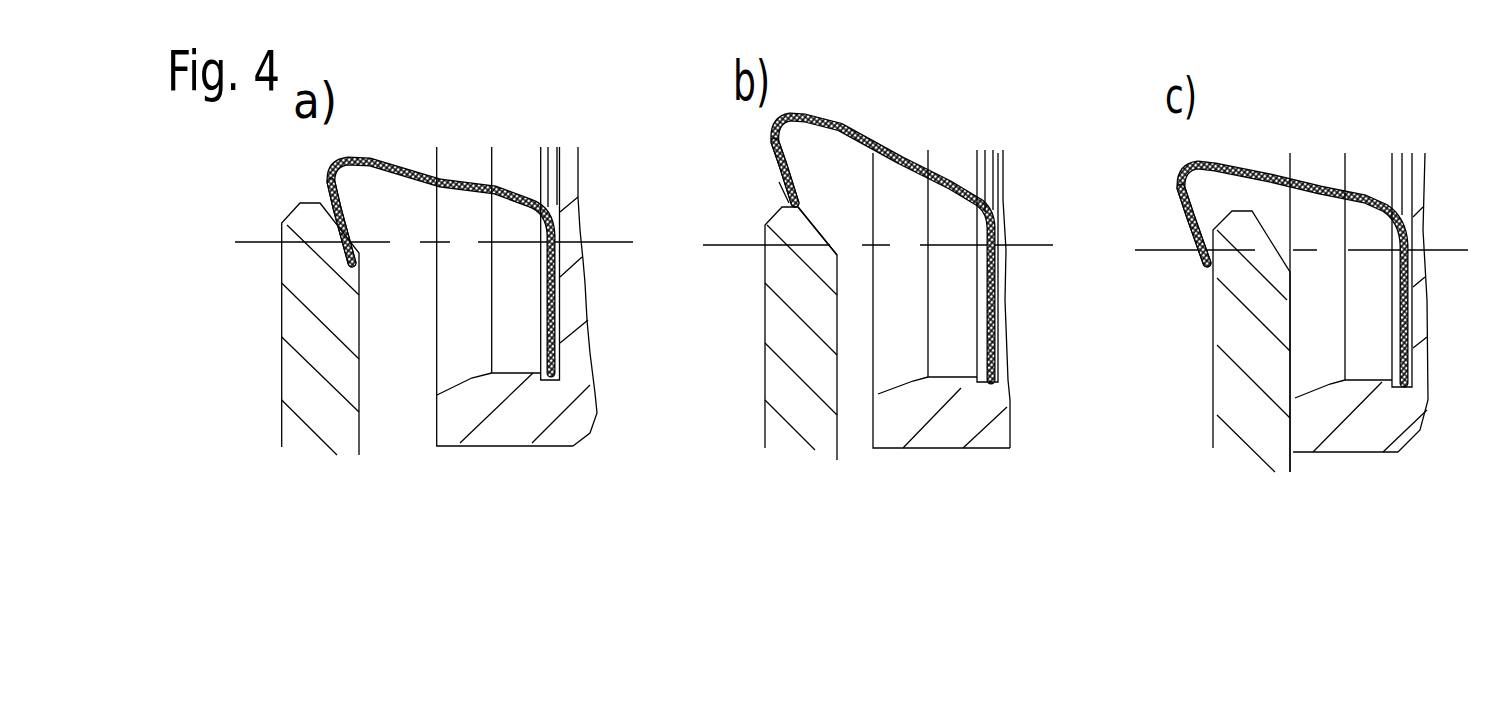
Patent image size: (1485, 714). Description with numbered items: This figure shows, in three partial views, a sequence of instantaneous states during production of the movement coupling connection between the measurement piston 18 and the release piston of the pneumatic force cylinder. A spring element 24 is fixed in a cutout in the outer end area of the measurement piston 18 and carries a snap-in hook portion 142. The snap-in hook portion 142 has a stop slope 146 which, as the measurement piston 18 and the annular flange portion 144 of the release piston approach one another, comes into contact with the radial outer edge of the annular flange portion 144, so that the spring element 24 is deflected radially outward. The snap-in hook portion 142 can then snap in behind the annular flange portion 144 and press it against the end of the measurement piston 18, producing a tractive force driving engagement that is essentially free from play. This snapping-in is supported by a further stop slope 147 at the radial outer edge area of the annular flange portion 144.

The spring element 24 is at (398, 168).
The snap-in hook portion 142 is at (320, 177).
The annular flange portion 144 is at (297, 318).
The stop slope 146 is at (778, 179).
The stop slope 147 is at (818, 226).
The measurement piston 18 is at (513, 430).